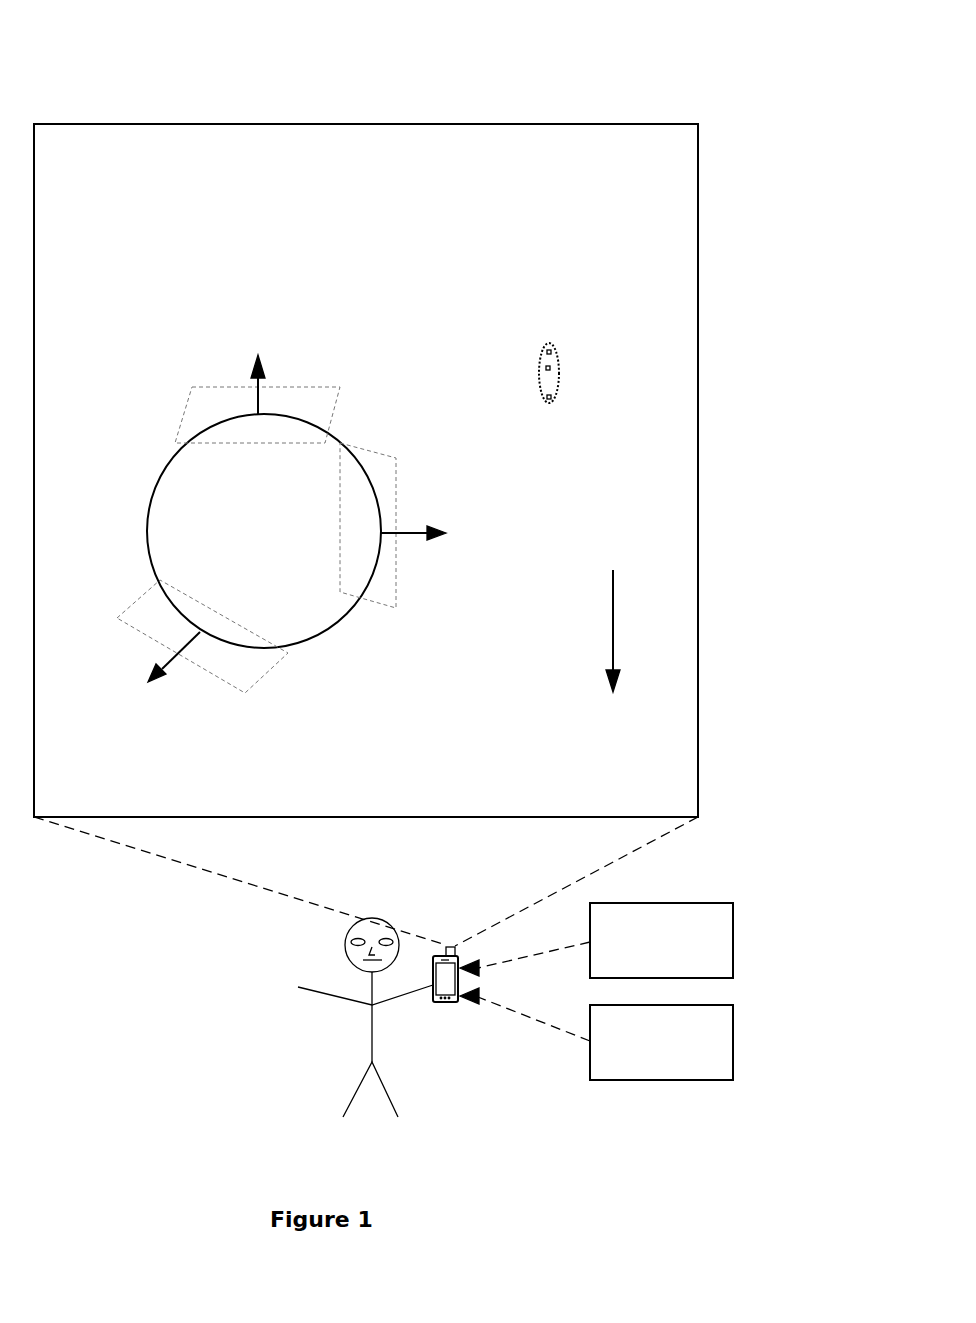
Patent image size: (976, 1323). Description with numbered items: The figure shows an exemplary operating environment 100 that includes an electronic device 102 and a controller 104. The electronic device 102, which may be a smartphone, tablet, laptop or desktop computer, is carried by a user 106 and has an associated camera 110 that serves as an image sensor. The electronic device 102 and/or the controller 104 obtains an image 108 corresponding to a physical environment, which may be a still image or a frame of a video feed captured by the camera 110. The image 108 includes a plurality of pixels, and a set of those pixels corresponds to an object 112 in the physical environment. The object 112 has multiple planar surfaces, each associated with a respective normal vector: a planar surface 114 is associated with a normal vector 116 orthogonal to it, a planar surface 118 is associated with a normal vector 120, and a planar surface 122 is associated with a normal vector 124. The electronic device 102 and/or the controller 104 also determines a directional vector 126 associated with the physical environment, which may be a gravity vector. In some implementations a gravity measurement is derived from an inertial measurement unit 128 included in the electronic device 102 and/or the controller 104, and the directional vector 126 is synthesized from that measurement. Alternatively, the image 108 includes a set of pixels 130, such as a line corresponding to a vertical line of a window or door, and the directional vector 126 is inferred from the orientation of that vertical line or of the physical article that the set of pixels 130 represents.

The operating environment 100 is at (98, 35).
The electronic device 102 is at (458, 1000).
The controller 104 is at (596, 940).
The user 106 is at (351, 1103).
The image 108 is at (366, 470).
The camera 110 is at (455, 951).
The object 112 is at (264, 531).
The planar surface 114 is at (343, 406).
The normal vector 116 is at (268, 373).
The planar surface 118 is at (403, 494).
The normal vector 120 is at (448, 537).
The planar surface 122 is at (276, 672).
The normal vector 124 is at (147, 678).
The directional vector 126 is at (615, 620).
The inertial measurement unit 128 is at (596, 1034).
The set of pixels 130 is at (558, 361).